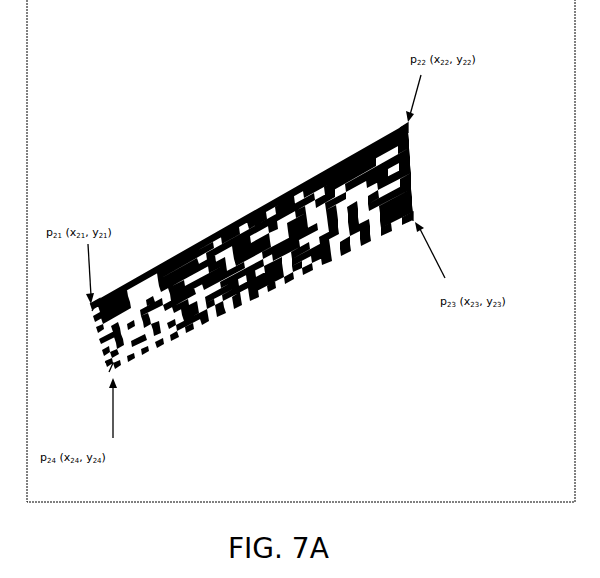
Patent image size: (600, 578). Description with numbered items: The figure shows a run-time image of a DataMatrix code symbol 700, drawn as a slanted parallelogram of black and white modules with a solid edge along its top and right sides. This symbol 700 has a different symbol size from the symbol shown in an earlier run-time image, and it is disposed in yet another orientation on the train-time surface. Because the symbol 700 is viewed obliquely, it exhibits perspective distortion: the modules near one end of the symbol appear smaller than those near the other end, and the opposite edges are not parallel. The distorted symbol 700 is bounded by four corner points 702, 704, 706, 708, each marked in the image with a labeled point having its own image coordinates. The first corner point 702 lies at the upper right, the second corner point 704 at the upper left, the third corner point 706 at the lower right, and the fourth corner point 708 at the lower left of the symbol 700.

The DataMatrix code symbol 700 is at (257, 183).
The corner point 702 is at (410, 125).
The corner point 704 is at (89, 305).
The corner point 706 is at (414, 219).
The corner point 708 is at (114, 371).